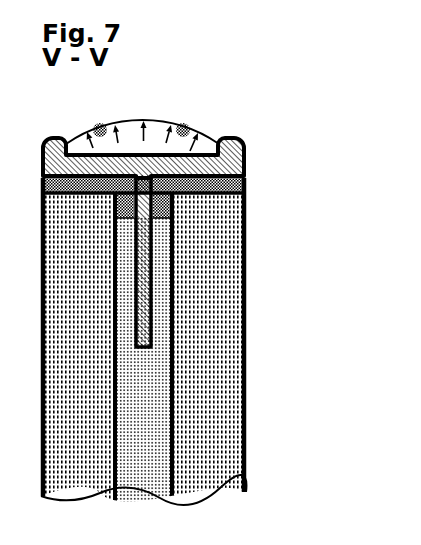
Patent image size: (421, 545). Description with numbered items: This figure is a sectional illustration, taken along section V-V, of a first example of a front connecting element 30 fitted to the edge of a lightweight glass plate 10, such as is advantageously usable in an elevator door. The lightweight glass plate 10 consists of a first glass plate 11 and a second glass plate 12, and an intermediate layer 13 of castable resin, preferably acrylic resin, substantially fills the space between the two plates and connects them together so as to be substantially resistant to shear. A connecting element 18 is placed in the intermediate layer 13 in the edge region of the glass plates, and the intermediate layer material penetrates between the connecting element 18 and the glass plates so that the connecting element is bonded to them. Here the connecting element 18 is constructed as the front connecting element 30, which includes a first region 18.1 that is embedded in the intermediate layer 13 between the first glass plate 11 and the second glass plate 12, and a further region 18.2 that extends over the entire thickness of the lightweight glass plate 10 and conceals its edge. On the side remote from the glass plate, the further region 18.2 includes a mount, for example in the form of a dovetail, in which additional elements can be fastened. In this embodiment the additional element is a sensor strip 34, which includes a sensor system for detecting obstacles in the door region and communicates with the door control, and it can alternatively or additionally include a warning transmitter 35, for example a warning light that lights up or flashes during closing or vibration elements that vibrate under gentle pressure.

The lightweight glass plate 10 is at (183, 65).
The first glass plate 11 is at (213, 370).
The second glass plate 12 is at (70, 453).
The intermediate layer 13 is at (143, 398).
The connecting element 18 is at (203, 212).
The front connecting element 30 is at (172, 197).
The first region 18.1 is at (143, 270).
The further region 18.2 is at (247, 161).
The sensor strip 34 is at (157, 138).
The warning transmitter 35 is at (112, 125).